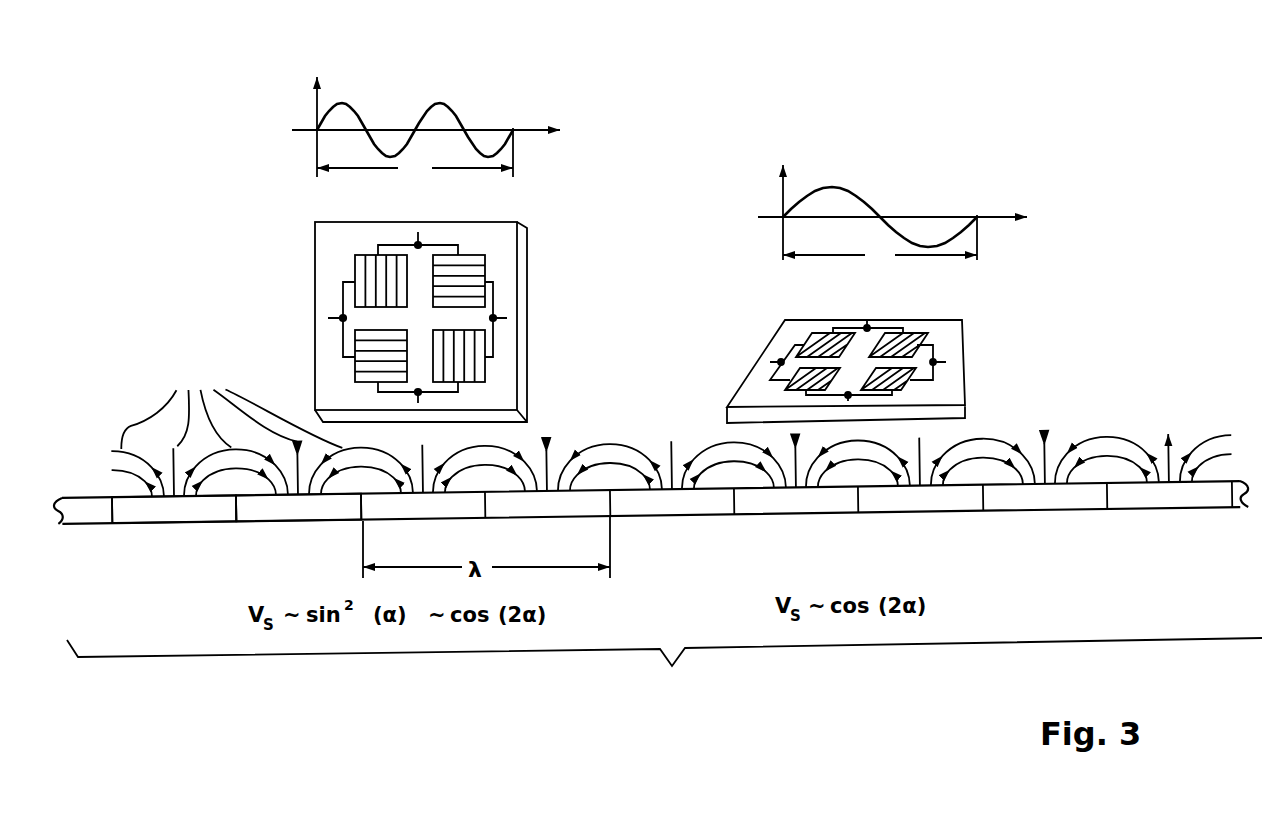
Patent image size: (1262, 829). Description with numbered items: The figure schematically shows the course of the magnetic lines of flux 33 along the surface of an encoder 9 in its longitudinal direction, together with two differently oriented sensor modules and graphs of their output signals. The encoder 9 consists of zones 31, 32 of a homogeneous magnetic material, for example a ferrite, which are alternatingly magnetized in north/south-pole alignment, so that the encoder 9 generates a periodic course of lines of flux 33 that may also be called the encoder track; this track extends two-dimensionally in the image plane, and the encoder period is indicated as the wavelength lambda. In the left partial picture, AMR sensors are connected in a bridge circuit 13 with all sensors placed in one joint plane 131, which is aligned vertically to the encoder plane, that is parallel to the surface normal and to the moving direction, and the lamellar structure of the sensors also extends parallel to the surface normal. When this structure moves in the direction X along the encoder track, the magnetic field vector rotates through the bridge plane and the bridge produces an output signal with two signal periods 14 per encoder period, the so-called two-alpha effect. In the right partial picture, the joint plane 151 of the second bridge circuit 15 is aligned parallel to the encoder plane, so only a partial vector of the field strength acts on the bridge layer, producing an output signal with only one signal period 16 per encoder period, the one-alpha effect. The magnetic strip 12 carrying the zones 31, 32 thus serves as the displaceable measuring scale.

The encoder 9 is at (664, 668).
The magnetic strip / measuring scale 12 is at (193, 513).
The bridge circuit 13 is at (472, 270).
The joint plane 131 is at (503, 290).
The signal periods 14 is at (368, 107).
The second magnetoresistive sensor bridge 15 is at (925, 380).
The second sensor chip substrate 151 is at (947, 333).
The signal period 16 is at (880, 195).
The zone of homogeneous magnetic material 31 is at (208, 513).
The zone of homogeneous magnetic material 32 is at (277, 513).
The lines of flux 33 is at (671, 423).